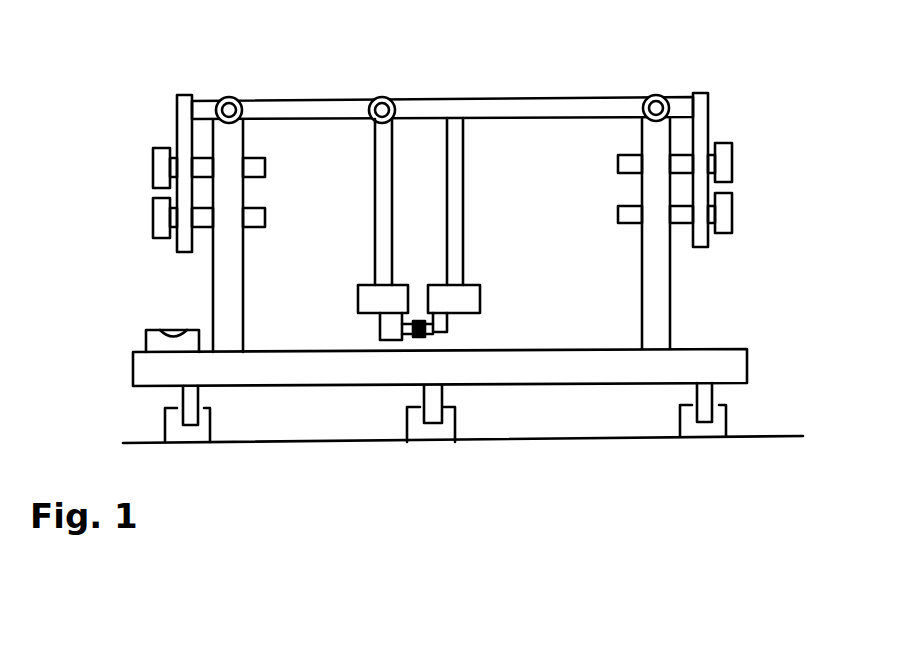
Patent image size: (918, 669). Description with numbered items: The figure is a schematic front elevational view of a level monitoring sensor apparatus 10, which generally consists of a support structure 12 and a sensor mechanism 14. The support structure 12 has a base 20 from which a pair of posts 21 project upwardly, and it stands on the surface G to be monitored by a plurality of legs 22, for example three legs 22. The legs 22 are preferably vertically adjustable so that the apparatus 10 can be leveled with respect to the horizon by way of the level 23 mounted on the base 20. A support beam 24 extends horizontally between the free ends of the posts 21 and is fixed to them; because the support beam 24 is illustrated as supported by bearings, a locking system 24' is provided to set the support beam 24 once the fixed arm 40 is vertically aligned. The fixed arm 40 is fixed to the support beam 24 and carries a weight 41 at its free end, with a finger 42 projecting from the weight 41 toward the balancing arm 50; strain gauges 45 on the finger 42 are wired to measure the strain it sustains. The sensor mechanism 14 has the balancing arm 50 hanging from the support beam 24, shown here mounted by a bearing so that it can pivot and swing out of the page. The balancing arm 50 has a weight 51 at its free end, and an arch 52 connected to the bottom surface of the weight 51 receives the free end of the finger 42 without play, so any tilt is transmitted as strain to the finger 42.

The level monitoring sensor apparatus 10 is at (288, 56).
The support structure 12 is at (413, 402).
The sensor mechanism 14 is at (409, 273).
The base 20 is at (288, 375).
The posts 21 is at (215, 290).
The legs 22 is at (212, 433).
The level 23 is at (146, 335).
The support beam 24 is at (442, 90).
The locking system 24' is at (412, 160).
The fixed arm 40 is at (463, 180).
The weight 41 is at (480, 293).
The finger 42 is at (447, 325).
The strain gauges 45 is at (417, 337).
The balancing arm 50 is at (378, 180).
The weight 51 is at (358, 296).
The arch 52 is at (380, 322).
The surface G is at (772, 433).